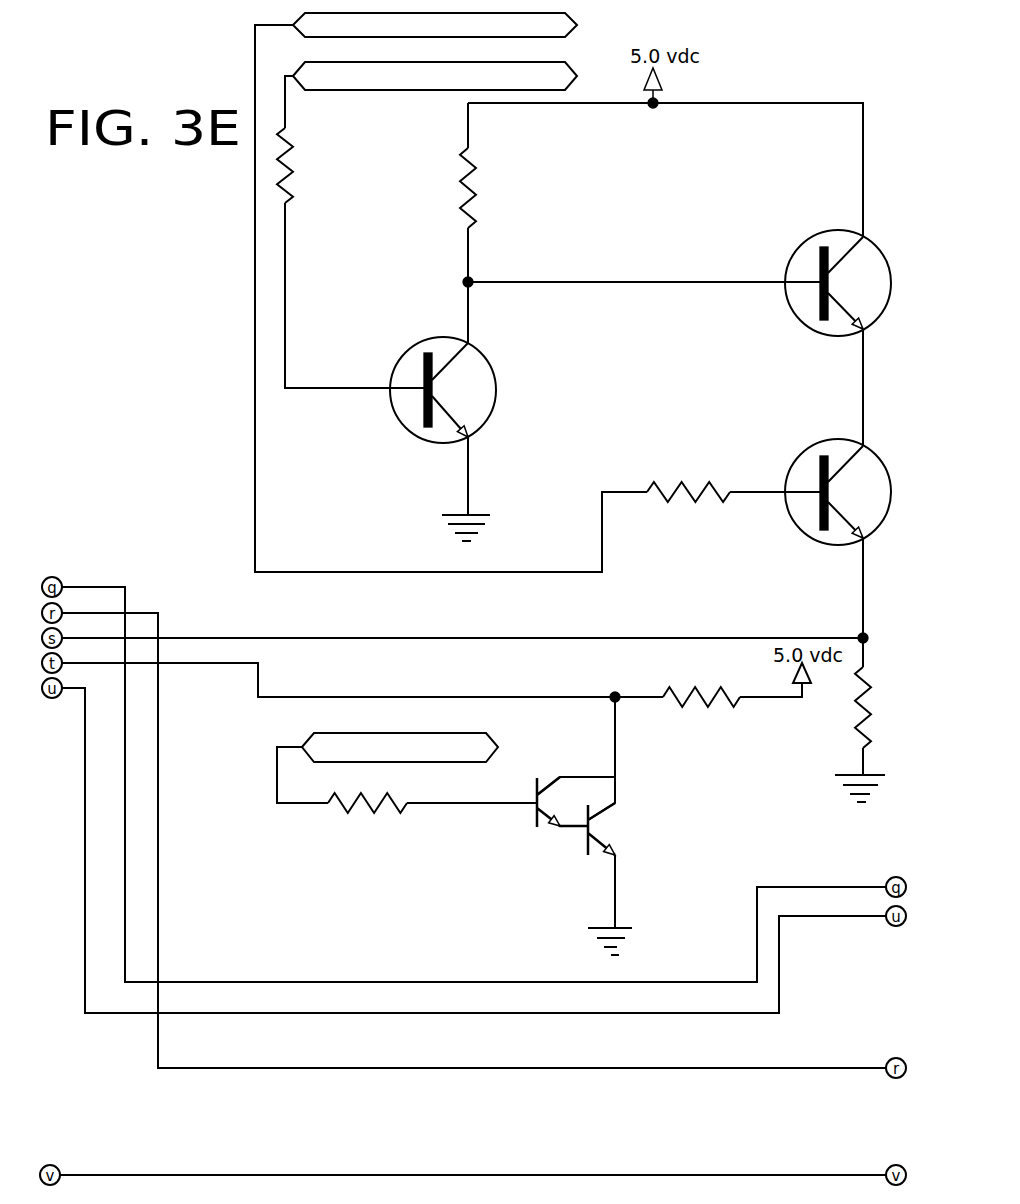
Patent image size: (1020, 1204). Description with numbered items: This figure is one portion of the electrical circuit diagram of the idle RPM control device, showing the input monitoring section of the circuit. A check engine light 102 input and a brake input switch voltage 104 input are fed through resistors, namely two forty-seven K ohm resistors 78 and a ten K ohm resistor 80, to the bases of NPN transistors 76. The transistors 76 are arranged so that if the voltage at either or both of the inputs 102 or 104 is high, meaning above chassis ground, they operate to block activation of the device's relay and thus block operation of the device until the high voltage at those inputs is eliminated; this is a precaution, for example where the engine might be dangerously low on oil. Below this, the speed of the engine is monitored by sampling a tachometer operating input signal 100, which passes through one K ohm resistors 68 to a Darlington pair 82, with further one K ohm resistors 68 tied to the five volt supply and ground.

The check engine light 102 is at (579, 19).
The brake input switch voltage 104 is at (385, 92).
The 47K ohm resistor 78 is at (294, 170).
The 10K ohm resistor 80 is at (476, 195).
The NPN transistor 76 is at (497, 392).
The 1K ohm resistor 68 is at (372, 808).
The tachometer operating input signal 100 is at (372, 732).
The Darlington pair 82 is at (535, 820).